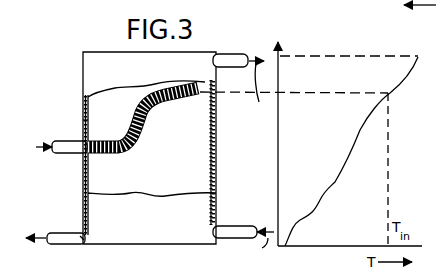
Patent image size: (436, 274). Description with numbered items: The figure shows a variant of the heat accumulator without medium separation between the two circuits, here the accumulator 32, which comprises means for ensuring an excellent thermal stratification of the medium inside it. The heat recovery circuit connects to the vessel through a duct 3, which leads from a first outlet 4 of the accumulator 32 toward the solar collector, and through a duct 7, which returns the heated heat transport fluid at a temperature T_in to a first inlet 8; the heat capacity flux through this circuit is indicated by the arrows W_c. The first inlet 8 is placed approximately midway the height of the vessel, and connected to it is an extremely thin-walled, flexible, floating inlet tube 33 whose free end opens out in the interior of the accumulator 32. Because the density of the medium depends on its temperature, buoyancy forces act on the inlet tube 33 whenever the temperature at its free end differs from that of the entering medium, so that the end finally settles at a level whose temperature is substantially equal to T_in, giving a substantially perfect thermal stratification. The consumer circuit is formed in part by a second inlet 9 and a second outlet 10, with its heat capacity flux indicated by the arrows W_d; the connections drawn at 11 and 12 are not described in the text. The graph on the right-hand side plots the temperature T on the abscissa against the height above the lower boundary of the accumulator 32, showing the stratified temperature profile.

The duct 3 is at (50, 232).
The first outlet 4 is at (76, 232).
The duct 7 is at (60, 141).
The first inlet 8 is at (79, 136).
The second inlet 9 is at (222, 226).
The second outlet 10 is at (228, 56).
The heating water outlet connection 11 is at (257, 58).
The heating water inlet connection 12 is at (248, 226).
The heat accumulator 32 is at (96, 182).
The floating inlet tube 33 is at (132, 146).